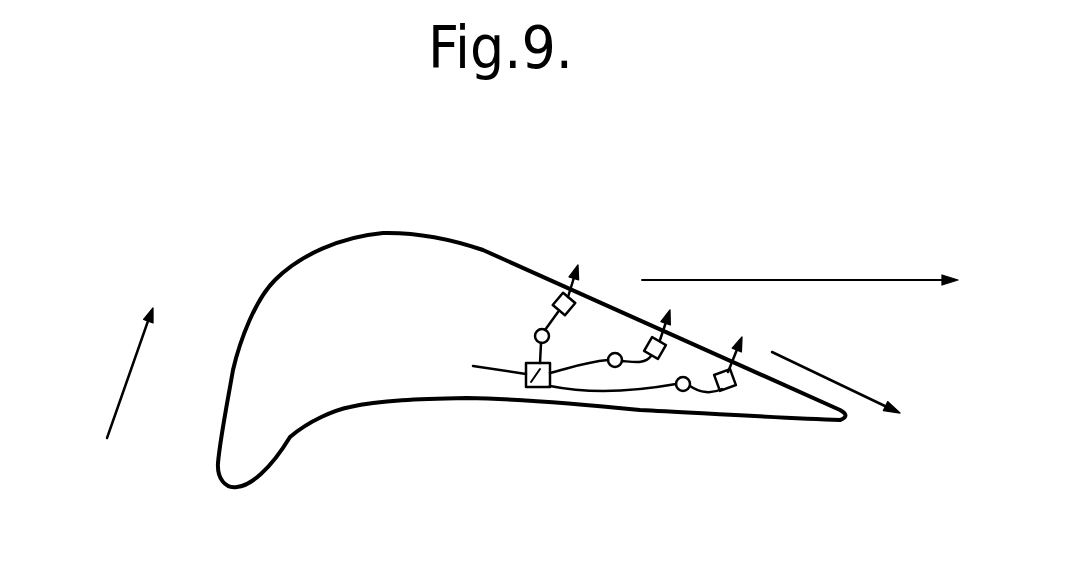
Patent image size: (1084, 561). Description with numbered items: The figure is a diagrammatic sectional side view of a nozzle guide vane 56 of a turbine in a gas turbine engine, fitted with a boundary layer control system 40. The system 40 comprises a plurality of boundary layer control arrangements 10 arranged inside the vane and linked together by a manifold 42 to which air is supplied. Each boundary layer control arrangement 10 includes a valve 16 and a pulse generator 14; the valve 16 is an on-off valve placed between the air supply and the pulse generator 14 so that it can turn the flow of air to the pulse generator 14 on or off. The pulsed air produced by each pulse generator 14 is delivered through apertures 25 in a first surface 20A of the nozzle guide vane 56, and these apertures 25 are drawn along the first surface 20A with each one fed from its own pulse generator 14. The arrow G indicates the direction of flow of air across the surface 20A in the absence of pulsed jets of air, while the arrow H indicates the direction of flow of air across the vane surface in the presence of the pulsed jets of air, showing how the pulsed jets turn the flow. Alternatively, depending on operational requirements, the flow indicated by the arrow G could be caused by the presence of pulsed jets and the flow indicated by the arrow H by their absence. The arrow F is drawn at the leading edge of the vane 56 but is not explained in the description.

The first surface 20A is at (513, 265).
The pulse generator 14 is at (551, 291).
The valve 16 is at (535, 336).
The manifold 42 is at (528, 388).
The apertures 25 is at (575, 262).
The boundary layer control arrangement 10 is at (522, 300).
The nozzle guide vane 56 is at (358, 387).
The boundary layer control system 40 is at (568, 406).
The arrow G is at (817, 280).
The arrow H is at (853, 385).
The flow direction F is at (127, 375).